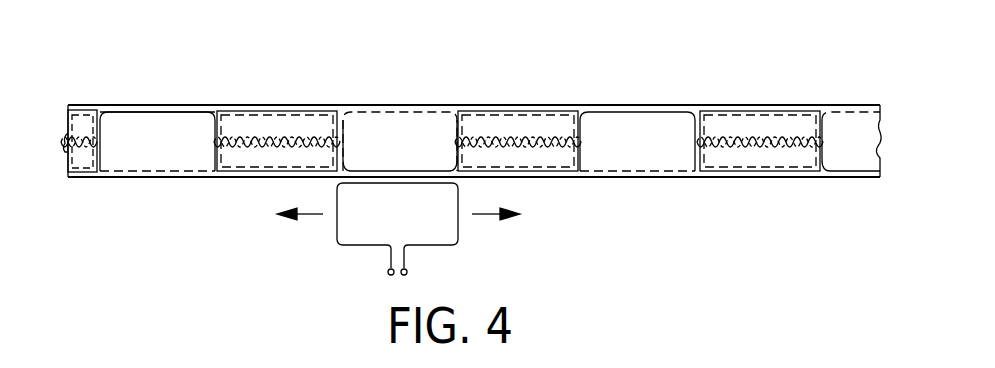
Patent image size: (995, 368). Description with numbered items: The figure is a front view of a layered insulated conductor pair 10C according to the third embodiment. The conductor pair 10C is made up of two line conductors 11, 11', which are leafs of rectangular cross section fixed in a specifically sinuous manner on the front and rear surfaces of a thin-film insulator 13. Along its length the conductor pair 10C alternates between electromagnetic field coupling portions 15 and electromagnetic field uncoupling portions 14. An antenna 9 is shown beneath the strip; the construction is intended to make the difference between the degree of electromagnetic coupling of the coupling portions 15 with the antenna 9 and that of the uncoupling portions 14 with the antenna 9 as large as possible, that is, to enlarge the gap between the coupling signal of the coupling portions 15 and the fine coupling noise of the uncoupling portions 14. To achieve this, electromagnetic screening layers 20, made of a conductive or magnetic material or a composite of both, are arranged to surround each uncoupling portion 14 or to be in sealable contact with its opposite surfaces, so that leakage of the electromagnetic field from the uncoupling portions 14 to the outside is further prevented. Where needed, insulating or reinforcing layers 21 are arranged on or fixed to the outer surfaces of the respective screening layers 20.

The antenna 9 is at (367, 230).
The layered insulated conductor pair 10C is at (712, 104).
The line conductor 11 is at (148, 71).
The line conductor 11' is at (157, 210).
The insulator 13 is at (204, 104).
The electromagnetic field uncoupling portion 14 is at (283, 135).
The electromagnetic field coupling portion 15 is at (155, 128).
The electromagnetic screening layer 20 is at (318, 108).
The insulating or reinforcing layer 21 is at (330, 110).